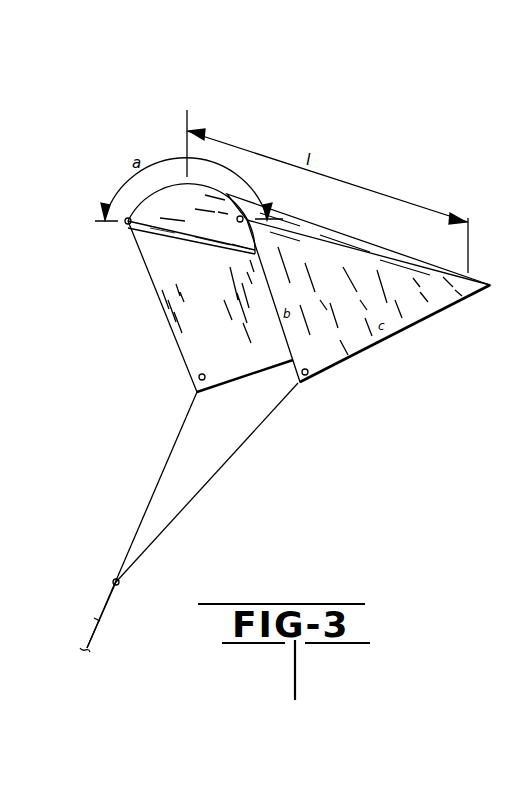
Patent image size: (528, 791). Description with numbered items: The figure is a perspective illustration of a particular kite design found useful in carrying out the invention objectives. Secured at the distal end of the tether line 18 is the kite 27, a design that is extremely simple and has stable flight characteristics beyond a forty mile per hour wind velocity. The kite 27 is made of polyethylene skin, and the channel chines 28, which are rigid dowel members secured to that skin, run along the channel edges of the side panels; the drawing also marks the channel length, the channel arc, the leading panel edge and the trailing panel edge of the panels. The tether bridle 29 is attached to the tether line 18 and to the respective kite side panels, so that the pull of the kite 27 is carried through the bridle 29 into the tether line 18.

The kite 27 is at (130, 310).
The channel chines 28 is at (190, 237).
The tether bridle 29 is at (196, 492).
The tether line 18 is at (97, 620).